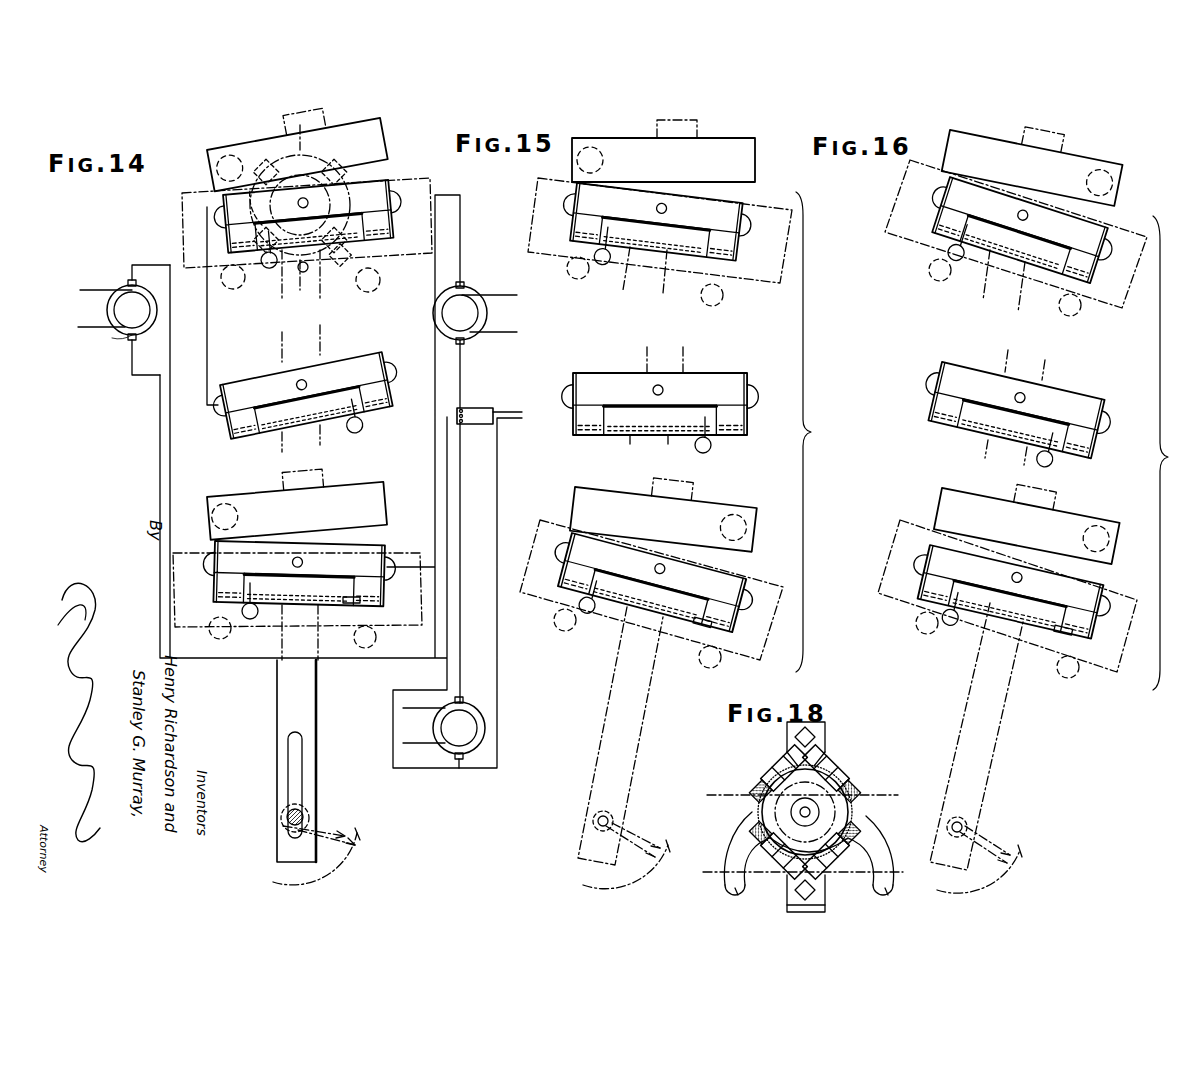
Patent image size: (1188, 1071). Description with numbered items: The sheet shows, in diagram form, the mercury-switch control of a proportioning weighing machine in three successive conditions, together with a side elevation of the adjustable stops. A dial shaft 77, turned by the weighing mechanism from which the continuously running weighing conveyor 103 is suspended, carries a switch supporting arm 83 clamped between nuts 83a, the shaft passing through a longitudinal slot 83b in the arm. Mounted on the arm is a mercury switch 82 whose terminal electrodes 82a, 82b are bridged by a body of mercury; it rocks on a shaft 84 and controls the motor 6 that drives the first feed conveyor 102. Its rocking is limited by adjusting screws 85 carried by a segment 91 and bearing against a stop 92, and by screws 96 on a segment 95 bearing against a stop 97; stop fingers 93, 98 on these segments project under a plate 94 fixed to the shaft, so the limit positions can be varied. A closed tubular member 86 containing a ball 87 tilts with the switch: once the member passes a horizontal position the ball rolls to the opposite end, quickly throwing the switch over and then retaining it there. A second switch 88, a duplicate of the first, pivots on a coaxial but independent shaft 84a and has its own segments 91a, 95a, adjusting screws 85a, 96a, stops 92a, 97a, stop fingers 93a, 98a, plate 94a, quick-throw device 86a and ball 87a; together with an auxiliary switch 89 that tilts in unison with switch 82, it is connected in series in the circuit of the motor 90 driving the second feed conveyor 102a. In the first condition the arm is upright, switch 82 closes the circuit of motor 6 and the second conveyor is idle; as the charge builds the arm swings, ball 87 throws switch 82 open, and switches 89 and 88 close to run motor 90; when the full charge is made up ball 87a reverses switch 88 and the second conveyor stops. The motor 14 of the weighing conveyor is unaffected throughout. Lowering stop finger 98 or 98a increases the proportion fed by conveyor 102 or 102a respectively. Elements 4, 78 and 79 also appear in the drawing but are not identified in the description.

In FIG. 14, the motor 4 is at (138, 320).
In FIG. 14, the motor 6 is at (120, 334).
In FIG. 14, the motor 14 is at (464, 706).
In FIG. 14, the dial shaft 77 is at (285, 829).
In FIG. 15, the dial shaft 77 is at (612, 817).
In FIG. 16, the dial shaft 77 is at (968, 822).
In FIG. 14, the lever swing line 78 is at (352, 822).
In FIG. 15, the lever swing line 78 is at (630, 838).
In FIG. 16, the lever swing line 78 is at (990, 840).
In FIG. 14, the arc of movement 79 is at (362, 838).
In FIG. 15, the arc of movement 79 is at (590, 886).
In FIG. 16, the arc of movement 79 is at (1025, 850).
In FIG. 14, the switch 82 is at (357, 549).
In FIG. 15, the switch 82 is at (722, 580).
In FIG. 16, the switch 82 is at (985, 608).
In FIG. 14, the terminal electrode 82a is at (252, 619).
In FIG. 15, the terminal electrode 82a is at (598, 613).
In FIG. 16, the terminal electrode 82a is at (945, 608).
In FIG. 14, the terminal electrode 82b is at (346, 606).
In FIG. 15, the terminal electrode 82b is at (700, 630).
In FIG. 16, the terminal electrode 82b is at (1050, 628).
In FIG. 14, the switch supporting arm 83 is at (278, 729).
In FIG. 15, the switch supporting arm 83 is at (607, 727).
In FIG. 16, the switch supporting arm 83 is at (996, 752).
In FIG. 14, the nuts 83a is at (306, 811).
In FIG. 14, the longitudinal slot 83b is at (303, 771).
In FIG. 14, the shaft 84 is at (297, 383).
In FIG. 15, the shaft 84 is at (653, 385).
In FIG. 16, the shaft 84 is at (1027, 398).
In FIG. 14, the shaft 84a is at (304, 206).
In FIG. 15, the shaft 84a is at (667, 209).
In FIG. 16, the shaft 84a is at (1030, 216).
In FIG. 18, the adjusting screws 85 is at (750, 835).
In FIG. 14, the adjusting screws 85a is at (342, 265).
In FIG. 14, the tubular member 86 is at (339, 491).
In FIG. 15, the tubular member 86 is at (705, 506).
In FIG. 16, the tubular member 86 is at (948, 502).
In FIG. 14, the quick-throw device 86a is at (368, 141).
In FIG. 15, the quick-throw device 86a is at (738, 161).
In FIG. 16, the quick-throw device 86a is at (1062, 162).
In FIG. 14, the ball 87 is at (230, 503).
In FIG. 15, the ball 87 is at (747, 521).
In FIG. 16, the ball 87 is at (1103, 520).
In FIG. 14, the ball 87a is at (232, 154).
In FIG. 15, the ball 87a is at (576, 160).
In FIG. 16, the ball 87a is at (1114, 179).
In FIG. 14, the switch 88 is at (372, 186).
In FIG. 15, the switch 88 is at (730, 206).
In FIG. 16, the switch 88 is at (1105, 168).
In FIG. 14, the auxiliary switch 89 is at (344, 364).
In FIG. 15, the auxiliary switch 89 is at (705, 385).
In FIG. 16, the auxiliary switch 89 is at (1075, 405).
In FIG. 14, the motor 90 is at (474, 300).
In FIG. 18, the segment 91 is at (852, 815).
In FIG. 14, the segment 91a is at (268, 195).
In FIG. 18, the stop 92 is at (823, 892).
In FIG. 14, the stop 92a is at (301, 273).
In FIG. 14, the stop finger 93 is at (216, 638).
In FIG. 15, the stop finger 93 is at (562, 632).
In FIG. 16, the stop finger 93 is at (927, 635).
In FIG. 18, the stop finger 93 is at (894, 892).
In FIG. 14, the stop finger 93a is at (230, 288).
In FIG. 15, the stop finger 93a is at (576, 280).
In FIG. 16, the stop finger 93a is at (946, 282).
In FIG. 14, the plate 94 is at (412, 630).
In FIG. 15, the plate 94 is at (744, 655).
In FIG. 16, the plate 94 is at (882, 572).
In FIG. 18, the plate 94 is at (722, 797).
In FIG. 14, the plate 94a is at (420, 254).
In FIG. 15, the plate 94a is at (772, 285).
In FIG. 16, the plate 94a is at (898, 240).
In FIG. 18, the segment 95 is at (755, 815).
In FIG. 14, the segment 95a is at (278, 212).
In FIG. 18, the adjusting screws 96 is at (838, 758).
In FIG. 14, the adjusting screws 96a is at (328, 162).
In FIG. 18, the stop 97 is at (822, 732).
In FIG. 14, the stop 97a is at (290, 122).
In FIG. 14, the stop finger 98 is at (360, 648).
In FIG. 15, the stop finger 98 is at (706, 668).
In FIG. 16, the stop finger 98 is at (1062, 678).
In FIG. 18, the stop finger 98 is at (746, 892).
In FIG. 14, the stop finger 98a is at (374, 290).
In FIG. 15, the stop finger 98a is at (713, 306).
In FIG. 16, the stop finger 98a is at (1067, 316).
In FIG. 14, the feed conveyor 102 is at (103, 290).
In FIG. 14, the feed conveyor 102a is at (504, 333).
In FIG. 14, the weighing conveyor 103 is at (418, 744).